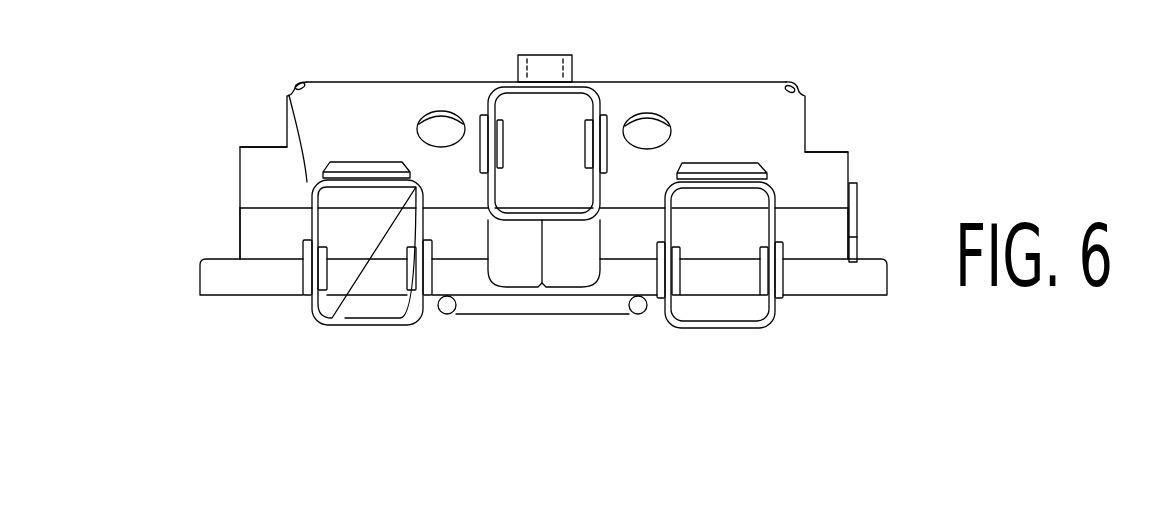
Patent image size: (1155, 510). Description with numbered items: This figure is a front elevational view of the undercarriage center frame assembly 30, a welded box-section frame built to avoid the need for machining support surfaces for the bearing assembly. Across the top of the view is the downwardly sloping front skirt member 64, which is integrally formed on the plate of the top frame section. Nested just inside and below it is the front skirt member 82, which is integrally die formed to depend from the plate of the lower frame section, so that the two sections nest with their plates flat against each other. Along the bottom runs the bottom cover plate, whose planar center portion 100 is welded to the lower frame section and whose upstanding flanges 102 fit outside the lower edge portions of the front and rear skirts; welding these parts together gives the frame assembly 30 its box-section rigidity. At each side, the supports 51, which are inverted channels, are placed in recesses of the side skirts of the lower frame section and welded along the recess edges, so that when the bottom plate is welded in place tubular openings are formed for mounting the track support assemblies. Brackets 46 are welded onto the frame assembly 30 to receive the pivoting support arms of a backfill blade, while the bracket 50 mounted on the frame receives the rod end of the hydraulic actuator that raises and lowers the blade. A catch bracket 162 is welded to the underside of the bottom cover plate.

The undercarriage center frame assembly 30 is at (532, 182).
The brackets 46 is at (291, 94).
The bracket 50 is at (595, 92).
The supports 51 is at (258, 155).
The front skirt member 64 is at (376, 108).
The front skirt member 82 is at (259, 226).
The planar center portion 100 is at (277, 287).
The upstanding flanges 102 is at (222, 272).
The catch bracket 162 is at (445, 313).